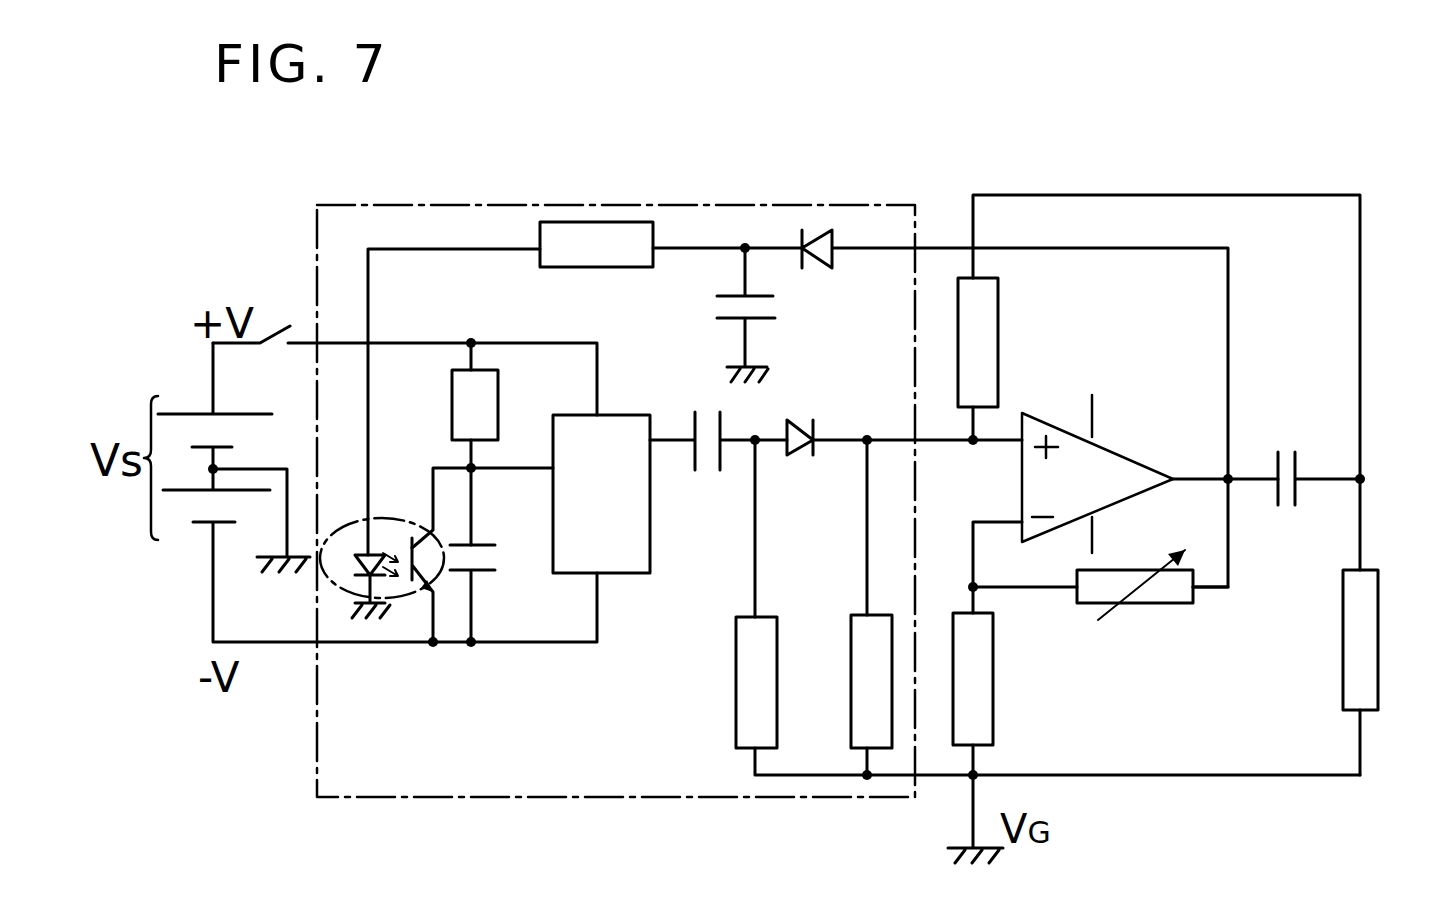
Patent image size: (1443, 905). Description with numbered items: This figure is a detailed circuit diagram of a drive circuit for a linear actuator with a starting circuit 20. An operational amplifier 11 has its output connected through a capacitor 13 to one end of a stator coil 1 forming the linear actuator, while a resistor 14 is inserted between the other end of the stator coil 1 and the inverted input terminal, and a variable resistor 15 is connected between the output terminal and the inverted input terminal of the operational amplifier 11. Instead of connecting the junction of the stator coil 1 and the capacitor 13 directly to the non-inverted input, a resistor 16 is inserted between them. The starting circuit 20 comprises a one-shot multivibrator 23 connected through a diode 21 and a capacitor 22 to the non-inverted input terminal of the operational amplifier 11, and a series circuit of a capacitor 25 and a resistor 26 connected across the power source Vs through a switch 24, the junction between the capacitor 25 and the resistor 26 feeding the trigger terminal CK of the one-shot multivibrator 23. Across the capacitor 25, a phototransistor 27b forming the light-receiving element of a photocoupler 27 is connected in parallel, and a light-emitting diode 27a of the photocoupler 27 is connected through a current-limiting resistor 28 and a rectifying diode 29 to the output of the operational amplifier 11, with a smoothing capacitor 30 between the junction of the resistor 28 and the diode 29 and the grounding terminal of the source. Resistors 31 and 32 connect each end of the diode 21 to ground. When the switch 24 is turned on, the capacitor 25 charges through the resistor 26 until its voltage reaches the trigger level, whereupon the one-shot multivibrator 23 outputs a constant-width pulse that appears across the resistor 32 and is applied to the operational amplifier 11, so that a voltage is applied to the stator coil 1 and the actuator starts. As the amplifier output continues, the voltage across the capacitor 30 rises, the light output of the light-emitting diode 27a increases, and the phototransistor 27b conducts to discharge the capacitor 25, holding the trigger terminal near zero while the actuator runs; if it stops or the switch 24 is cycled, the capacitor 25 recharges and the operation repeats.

The stator coil 1 is at (1372, 573).
The operational amplifier 11 is at (1117, 462).
The capacitor 13 is at (1288, 488).
The resistor 14 is at (987, 693).
The variable resistor 15 is at (1143, 597).
The resistor 16 is at (987, 337).
The starting circuit 20 is at (740, 204).
The diode 21 is at (788, 420).
The capacitor 22 is at (710, 437).
The one-shot multivibrator 23 is at (623, 548).
The switch 24 is at (280, 332).
The capacitor 25 is at (493, 560).
The resistor 26 is at (458, 390).
The photocoupler 27 is at (354, 646).
The light-emitting diode 27a is at (360, 574).
The phototransistor 27b is at (422, 578).
The current-limiting resistor 28 is at (612, 232).
The rectifying diode 29 is at (820, 240).
The smoothing capacitor 30 is at (765, 310).
The resistor 31 is at (747, 735).
The resistor 32 is at (864, 730).